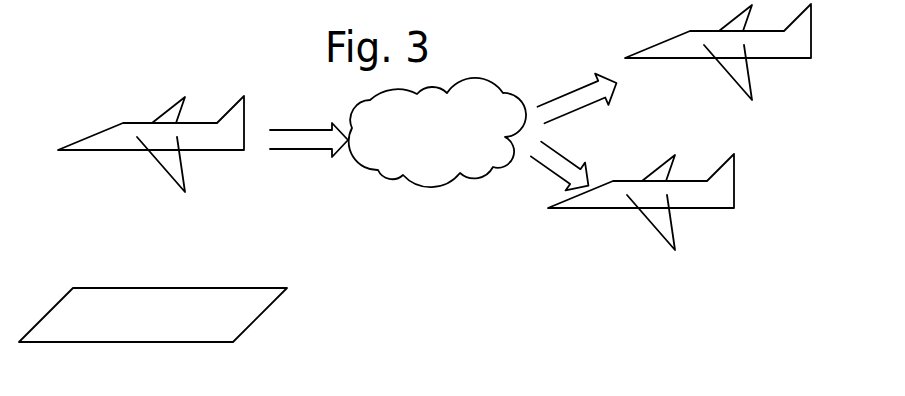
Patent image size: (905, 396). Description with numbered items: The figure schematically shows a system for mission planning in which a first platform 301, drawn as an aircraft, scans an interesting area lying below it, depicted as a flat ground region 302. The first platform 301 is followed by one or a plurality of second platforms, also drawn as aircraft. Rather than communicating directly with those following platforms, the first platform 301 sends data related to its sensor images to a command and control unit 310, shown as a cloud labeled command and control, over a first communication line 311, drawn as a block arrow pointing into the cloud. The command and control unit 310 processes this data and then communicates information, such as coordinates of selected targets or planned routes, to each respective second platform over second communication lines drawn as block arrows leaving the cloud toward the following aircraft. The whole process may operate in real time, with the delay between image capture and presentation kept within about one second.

The first platform 301 is at (151, 175).
The ground platform 302 is at (263, 312).
The first communication line 311 is at (307, 149).
The command and control unit 310 is at (440, 182).